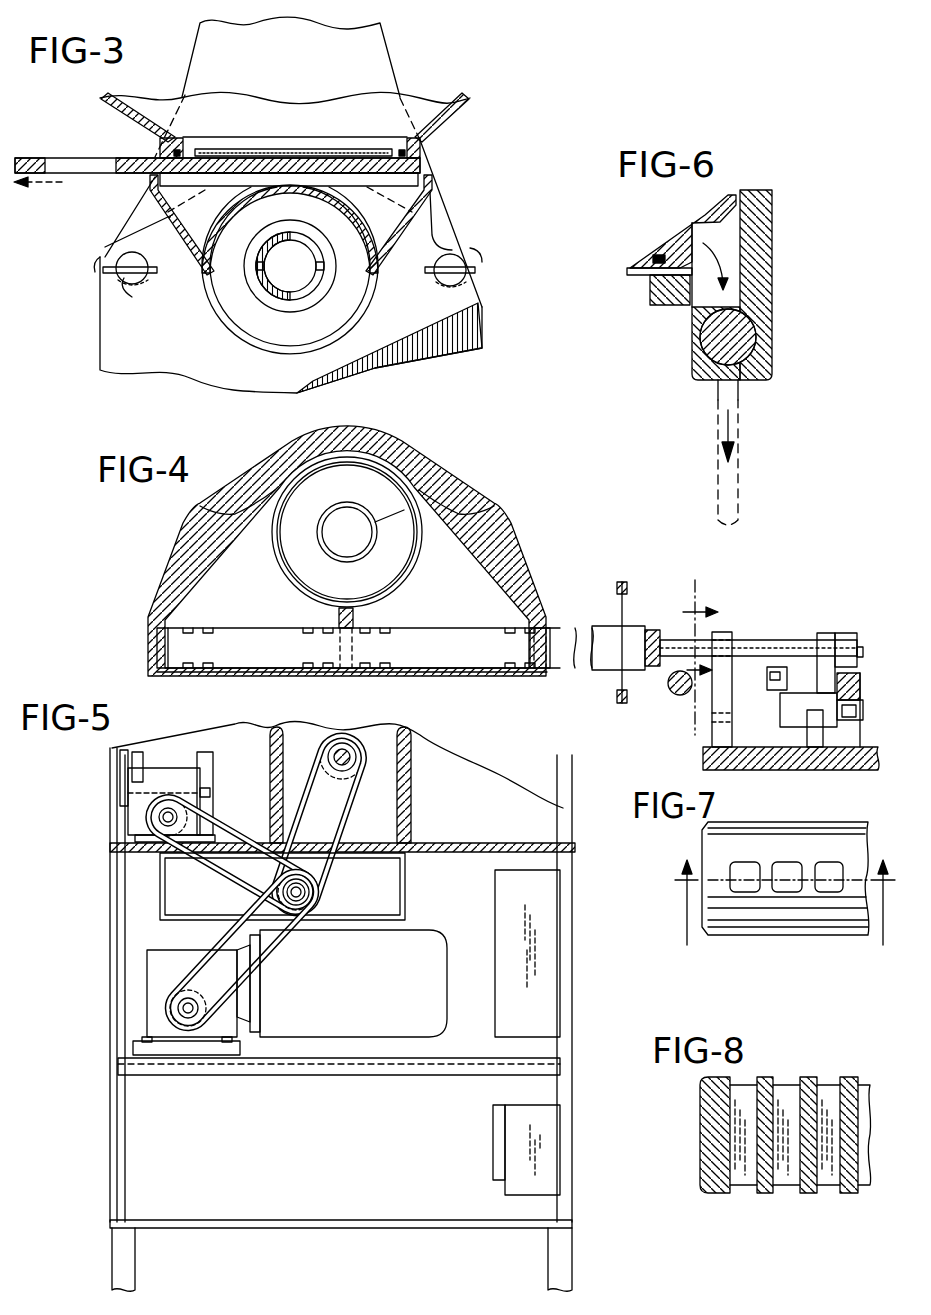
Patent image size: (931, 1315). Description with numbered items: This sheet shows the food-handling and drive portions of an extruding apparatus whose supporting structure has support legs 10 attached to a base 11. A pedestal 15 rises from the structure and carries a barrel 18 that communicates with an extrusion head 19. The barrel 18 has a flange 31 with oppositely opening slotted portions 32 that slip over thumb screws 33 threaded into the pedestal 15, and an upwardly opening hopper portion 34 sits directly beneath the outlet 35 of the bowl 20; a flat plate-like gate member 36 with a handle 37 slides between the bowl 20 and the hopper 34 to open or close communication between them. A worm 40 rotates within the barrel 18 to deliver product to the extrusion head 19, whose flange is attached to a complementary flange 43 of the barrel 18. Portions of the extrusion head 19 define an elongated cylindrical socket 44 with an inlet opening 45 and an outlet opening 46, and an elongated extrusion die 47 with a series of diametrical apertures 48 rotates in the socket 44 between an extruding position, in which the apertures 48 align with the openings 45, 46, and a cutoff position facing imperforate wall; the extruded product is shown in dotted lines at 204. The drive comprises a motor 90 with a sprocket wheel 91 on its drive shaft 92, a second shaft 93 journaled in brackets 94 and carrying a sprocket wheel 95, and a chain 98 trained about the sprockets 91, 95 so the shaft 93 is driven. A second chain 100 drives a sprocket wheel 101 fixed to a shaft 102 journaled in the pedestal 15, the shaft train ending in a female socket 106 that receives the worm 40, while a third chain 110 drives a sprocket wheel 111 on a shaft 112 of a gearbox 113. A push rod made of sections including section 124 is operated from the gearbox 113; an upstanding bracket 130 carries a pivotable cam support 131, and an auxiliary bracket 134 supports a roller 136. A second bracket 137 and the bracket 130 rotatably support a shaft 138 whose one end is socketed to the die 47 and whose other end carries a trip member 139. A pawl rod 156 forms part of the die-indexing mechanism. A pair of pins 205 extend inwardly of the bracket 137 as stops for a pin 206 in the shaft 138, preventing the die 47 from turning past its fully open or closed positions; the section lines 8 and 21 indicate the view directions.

In FIG. 7, the section line 8- 8 is at (785, 913).
In FIG. 5, the support legs 10 is at (118, 1263).
In FIG. 5, the base 11 is at (333, 1228).
In FIG. 3, the pedestal 15 is at (377, 53).
In FIG. 5, the pedestal 15 is at (411, 748).
In FIG. 3, the barrel 18 is at (258, 357).
In FIG. 4, the barrel 18 is at (287, 490).
In FIG. 6, the extrusion head 19 is at (757, 224).
In FIG. 4, the extrusion head 19 is at (180, 583).
In FIG. 3, the bowl 20 is at (471, 102).
In FIG. 4, the section line 21- 21 is at (699, 651).
In FIG. 3, the flange 31 is at (408, 318).
In FIG. 3, the slotted portions 32 is at (452, 247).
In FIG. 3, the thumb screws 33 is at (112, 262).
In FIG. 3, the hopper portion 34 is at (428, 190).
In FIG. 3, the outlet 35 is at (277, 147).
In FIG. 3, the gate member 36 is at (418, 168).
In FIG. 3, the handle 37 is at (60, 165).
In FIG. 6, the worm 40 is at (670, 220).
In FIG. 4, the worm 40 is at (387, 492).
In FIG. 6, the flange 43 is at (657, 294).
In FIG. 6, the cylindrical socket 44 is at (763, 338).
In FIG. 6, the inlet opening 45 is at (737, 298).
In FIG. 6, the outlet opening 46 is at (733, 380).
In FIG. 4, the outlet opening 46 is at (237, 675).
In FIG. 6, the extrusion die 47 is at (705, 347).
In FIG. 4, the extrusion die 47 is at (492, 653).
In FIG. 7, the extrusion die 47 is at (830, 920).
In FIG. 8, the extrusion die 47 is at (694, 1130).
In FIG. 6, the apertures 48 is at (723, 353).
In FIG. 4, the apertures 48 is at (190, 633).
In FIG. 7, the apertures 48 is at (818, 893).
In FIG. 8, the apertures 48 is at (833, 1180).
In FIG. 5, the motor 90 is at (397, 1001).
In FIG. 5, the sprocket wheel 91 is at (177, 997).
In FIG. 5, the drive shaft 92 is at (180, 1008).
In FIG. 5, the second shaft 93 is at (293, 897).
In FIG. 5, the brackets 94 is at (305, 877).
In FIG. 5, the sprocket wheel 95 is at (303, 893).
In FIG. 5, the chain 98 is at (267, 945).
In FIG. 5, the second chain 100 is at (358, 790).
In FIG. 5, the sprocket wheel 101 is at (330, 743).
In FIG. 5, the shaft 102 is at (347, 753).
In FIG. 3, the female socket 106 is at (262, 288).
In FIG. 5, the third chain 110 is at (180, 837).
In FIG. 5, the sprocket wheel 111 is at (183, 842).
In FIG. 5, the shaft 112 is at (163, 818).
In FIG. 5, the gearbox 113 is at (163, 772).
In FIG. 4, the push rod section 124 is at (853, 677).
In FIG. 4, the bracket 130 is at (827, 637).
In FIG. 4, the cam support 131 is at (793, 722).
In FIG. 4, the auxiliary bracket 134 is at (843, 745).
In FIG. 4, the roller 136 is at (843, 722).
In FIG. 4, the second bracket 137 is at (723, 692).
In FIG. 4, the shaft 138 is at (771, 645).
In FIG. 4, the trip member 139 is at (847, 633).
In FIG. 4, the pawl rod 156 is at (670, 690).
In FIG. 6, the extruded product 204 is at (740, 473).
In FIG. 4, the pins 205 is at (707, 637).
In FIG. 4, the pin 206 is at (707, 637).